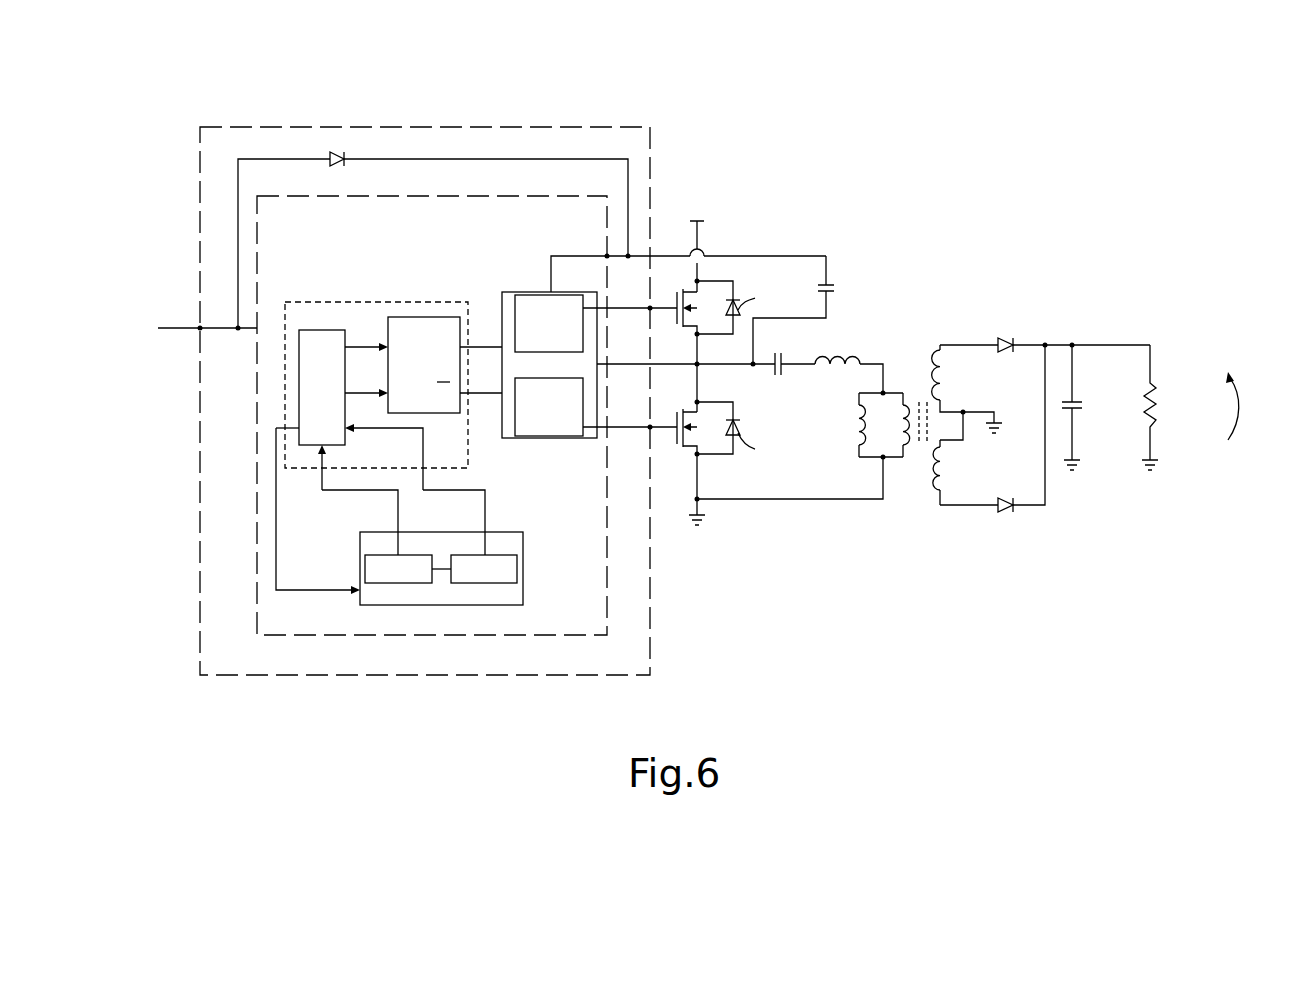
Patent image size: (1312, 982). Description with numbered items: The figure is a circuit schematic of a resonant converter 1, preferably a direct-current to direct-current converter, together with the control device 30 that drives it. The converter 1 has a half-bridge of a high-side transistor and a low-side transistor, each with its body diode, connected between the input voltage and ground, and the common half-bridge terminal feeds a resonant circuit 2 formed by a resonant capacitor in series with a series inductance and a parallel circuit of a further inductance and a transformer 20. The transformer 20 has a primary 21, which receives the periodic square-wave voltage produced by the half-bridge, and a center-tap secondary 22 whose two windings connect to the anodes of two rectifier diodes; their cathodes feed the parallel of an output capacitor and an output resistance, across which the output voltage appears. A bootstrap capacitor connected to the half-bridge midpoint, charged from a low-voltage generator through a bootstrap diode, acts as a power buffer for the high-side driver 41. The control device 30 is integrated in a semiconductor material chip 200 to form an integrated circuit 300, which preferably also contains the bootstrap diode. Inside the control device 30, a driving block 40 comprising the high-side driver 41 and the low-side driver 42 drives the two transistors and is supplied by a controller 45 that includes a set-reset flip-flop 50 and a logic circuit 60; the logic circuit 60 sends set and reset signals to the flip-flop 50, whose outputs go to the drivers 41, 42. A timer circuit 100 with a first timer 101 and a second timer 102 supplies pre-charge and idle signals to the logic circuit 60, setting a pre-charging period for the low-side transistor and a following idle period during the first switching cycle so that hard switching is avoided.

The integrated circuit 300 is at (455, 36).
The semiconductor material chip 200 is at (272, 127).
The control device 30 is at (257, 518).
The controller 45 is at (297, 300).
The logic circuit 60 is at (325, 342).
The set-reset flip-flop 50 is at (433, 317).
The driving block 40 is at (507, 418).
The high-side driver 41 is at (527, 296).
The low-side driver 42 is at (540, 438).
The timer circuit 100 is at (496, 532).
The first timer 101 is at (518, 569).
The second timer 102 is at (365, 568).
The resonant converter 1 is at (811, 230).
The resonant circuit 2 is at (801, 378).
The transformer 20 is at (917, 386).
The primary 21 is at (908, 470).
The center-tap secondary 22 is at (946, 332).